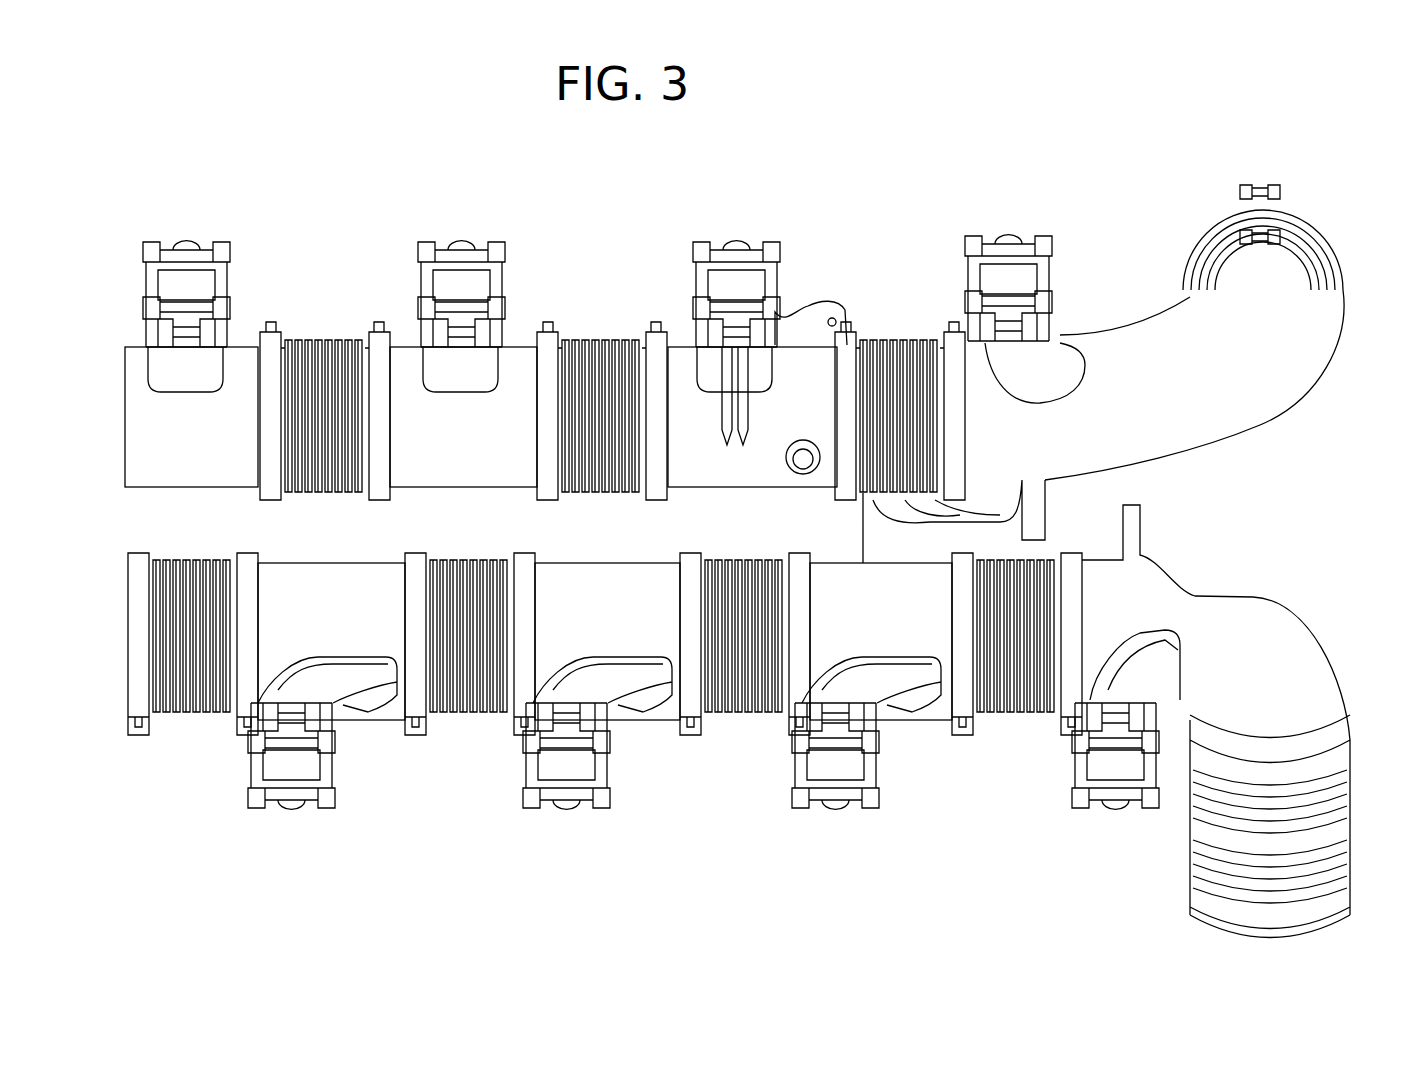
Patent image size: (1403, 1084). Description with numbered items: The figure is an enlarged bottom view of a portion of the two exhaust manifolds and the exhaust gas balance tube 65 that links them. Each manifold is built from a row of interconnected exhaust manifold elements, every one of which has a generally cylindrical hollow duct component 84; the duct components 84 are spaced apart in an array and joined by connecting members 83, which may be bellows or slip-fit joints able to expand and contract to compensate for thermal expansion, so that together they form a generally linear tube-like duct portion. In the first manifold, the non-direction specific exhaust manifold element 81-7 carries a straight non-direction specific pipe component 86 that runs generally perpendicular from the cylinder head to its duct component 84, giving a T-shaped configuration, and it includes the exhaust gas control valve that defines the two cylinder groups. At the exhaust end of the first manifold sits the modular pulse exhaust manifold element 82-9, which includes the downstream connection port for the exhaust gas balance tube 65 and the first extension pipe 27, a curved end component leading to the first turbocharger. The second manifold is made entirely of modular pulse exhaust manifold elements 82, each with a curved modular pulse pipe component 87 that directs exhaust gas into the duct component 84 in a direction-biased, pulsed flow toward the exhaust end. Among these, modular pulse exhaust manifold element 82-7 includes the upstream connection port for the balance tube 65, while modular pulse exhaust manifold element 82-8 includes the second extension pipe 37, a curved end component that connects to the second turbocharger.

The first extension pipe 27 is at (1230, 397).
The second extension pipe 37 is at (1258, 648).
The exhaust gas balance tube 65 is at (880, 533).
The non-direction specific exhaust manifold element 81-7 is at (805, 290).
The modular pulse exhaust manifold element 82 is at (553, 823).
The modular pulse exhaust manifold element 82-7 is at (838, 820).
The modular pulse exhaust manifold element 82-8 is at (1055, 822).
The modular pulse exhaust manifold element 82-9 is at (1015, 222).
The connecting member 83 is at (893, 348).
The duct component 84 is at (879, 623).
The non-direction specific pipe component 86 is at (433, 367).
The modular pulse pipe component 87 is at (1028, 370).